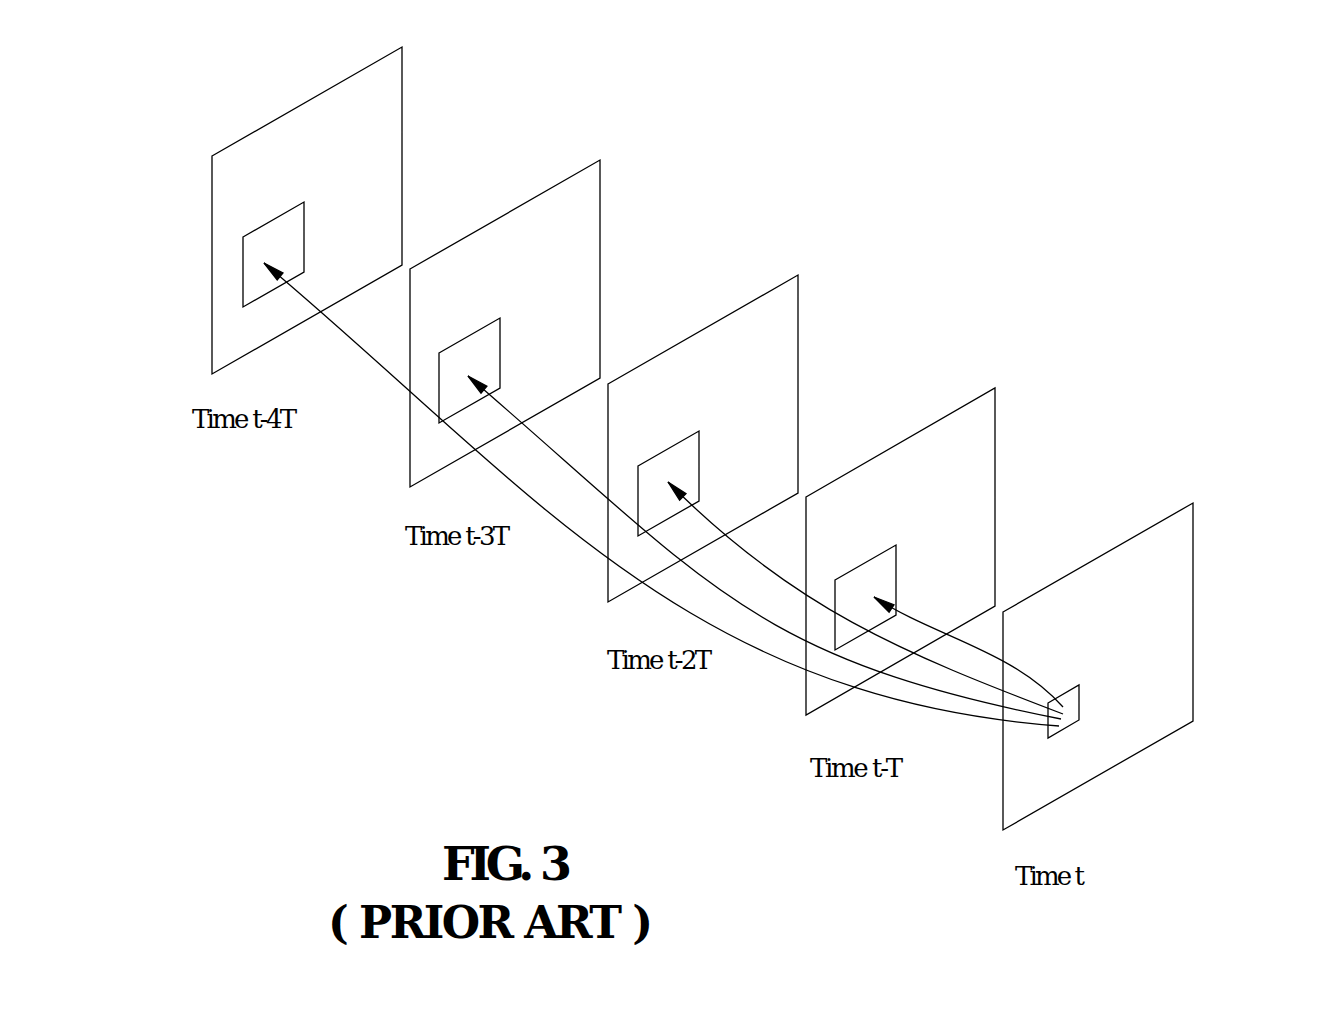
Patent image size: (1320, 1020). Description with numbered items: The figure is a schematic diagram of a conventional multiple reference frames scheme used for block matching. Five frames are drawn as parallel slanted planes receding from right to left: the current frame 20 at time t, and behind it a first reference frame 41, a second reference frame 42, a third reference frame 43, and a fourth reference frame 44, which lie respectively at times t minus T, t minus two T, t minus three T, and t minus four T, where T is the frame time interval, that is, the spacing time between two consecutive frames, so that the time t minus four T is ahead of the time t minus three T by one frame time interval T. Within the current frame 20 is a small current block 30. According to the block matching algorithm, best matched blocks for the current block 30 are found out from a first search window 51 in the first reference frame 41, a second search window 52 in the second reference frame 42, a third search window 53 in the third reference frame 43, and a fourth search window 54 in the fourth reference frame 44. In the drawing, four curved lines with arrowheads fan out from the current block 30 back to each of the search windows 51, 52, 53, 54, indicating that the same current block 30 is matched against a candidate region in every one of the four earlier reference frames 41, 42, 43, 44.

The current frame 20 is at (1163, 568).
The current block 30 is at (1065, 709).
The first reference frame 41 is at (972, 485).
The second reference frame 42 is at (773, 370).
The third reference frame 43 is at (575, 257).
The fourth reference frame 44 is at (377, 142).
The first search window 51 is at (865, 575).
The second search window 52 is at (668, 460).
The third search window 53 is at (471, 347).
The fourth search window 54 is at (273, 233).